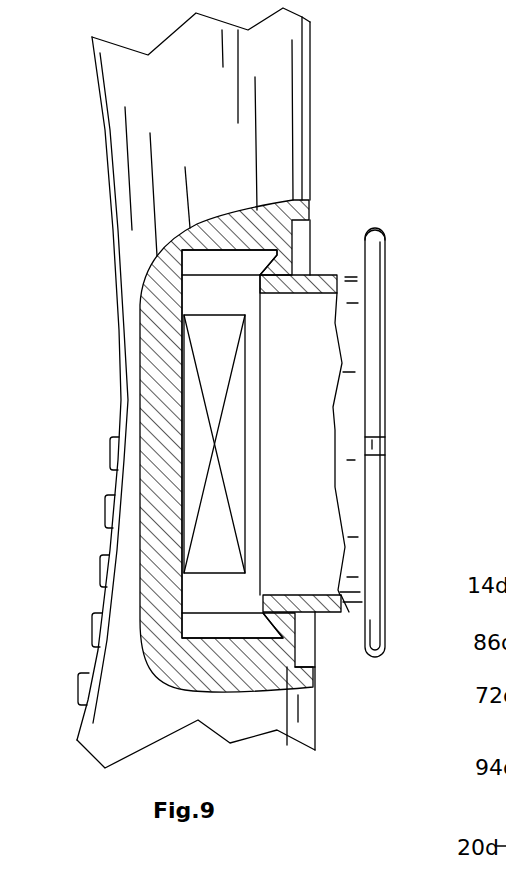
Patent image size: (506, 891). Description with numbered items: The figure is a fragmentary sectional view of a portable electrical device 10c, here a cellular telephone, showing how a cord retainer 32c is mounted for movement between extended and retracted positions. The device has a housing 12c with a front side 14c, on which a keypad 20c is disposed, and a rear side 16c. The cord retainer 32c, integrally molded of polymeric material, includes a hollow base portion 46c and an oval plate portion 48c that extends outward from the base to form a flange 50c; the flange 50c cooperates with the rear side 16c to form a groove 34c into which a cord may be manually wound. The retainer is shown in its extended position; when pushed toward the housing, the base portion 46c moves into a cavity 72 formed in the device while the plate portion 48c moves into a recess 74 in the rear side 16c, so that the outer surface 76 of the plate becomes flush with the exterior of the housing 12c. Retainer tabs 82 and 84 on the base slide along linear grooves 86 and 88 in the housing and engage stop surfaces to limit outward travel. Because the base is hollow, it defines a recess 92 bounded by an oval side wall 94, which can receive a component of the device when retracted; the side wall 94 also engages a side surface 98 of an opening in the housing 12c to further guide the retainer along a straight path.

The portable electrical device 10c is at (251, 386).
The housing 12c is at (274, 88).
The rear side 16c is at (311, 119).
The front side 14c is at (112, 204).
The keypad 20c is at (107, 522).
The linear groove 86 is at (193, 261).
The linear groove 88 is at (205, 627).
The cavity 72 is at (202, 294).
The side wall 94 is at (198, 472).
The retainer tab 82 is at (277, 292).
The retainer tab 84 is at (278, 594).
The recess 92 is at (305, 407).
The base portion 46c is at (352, 353).
The cord retainer 32c is at (422, 424).
The outer surface 76 is at (386, 496).
The plate portion 48c is at (371, 325).
The flange 50c is at (357, 245).
The groove 34c is at (342, 637).
The recess 74 is at (303, 657).
The side surface 98 is at (297, 616).